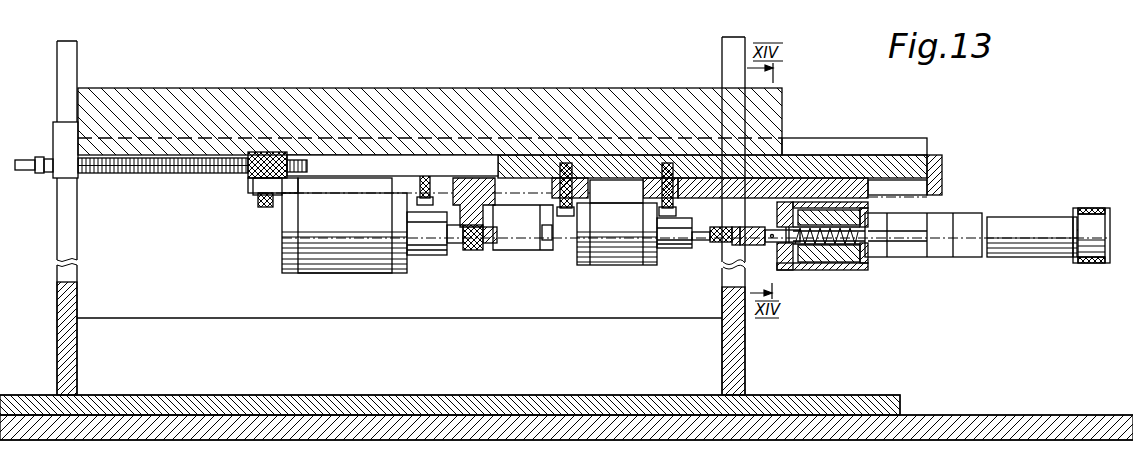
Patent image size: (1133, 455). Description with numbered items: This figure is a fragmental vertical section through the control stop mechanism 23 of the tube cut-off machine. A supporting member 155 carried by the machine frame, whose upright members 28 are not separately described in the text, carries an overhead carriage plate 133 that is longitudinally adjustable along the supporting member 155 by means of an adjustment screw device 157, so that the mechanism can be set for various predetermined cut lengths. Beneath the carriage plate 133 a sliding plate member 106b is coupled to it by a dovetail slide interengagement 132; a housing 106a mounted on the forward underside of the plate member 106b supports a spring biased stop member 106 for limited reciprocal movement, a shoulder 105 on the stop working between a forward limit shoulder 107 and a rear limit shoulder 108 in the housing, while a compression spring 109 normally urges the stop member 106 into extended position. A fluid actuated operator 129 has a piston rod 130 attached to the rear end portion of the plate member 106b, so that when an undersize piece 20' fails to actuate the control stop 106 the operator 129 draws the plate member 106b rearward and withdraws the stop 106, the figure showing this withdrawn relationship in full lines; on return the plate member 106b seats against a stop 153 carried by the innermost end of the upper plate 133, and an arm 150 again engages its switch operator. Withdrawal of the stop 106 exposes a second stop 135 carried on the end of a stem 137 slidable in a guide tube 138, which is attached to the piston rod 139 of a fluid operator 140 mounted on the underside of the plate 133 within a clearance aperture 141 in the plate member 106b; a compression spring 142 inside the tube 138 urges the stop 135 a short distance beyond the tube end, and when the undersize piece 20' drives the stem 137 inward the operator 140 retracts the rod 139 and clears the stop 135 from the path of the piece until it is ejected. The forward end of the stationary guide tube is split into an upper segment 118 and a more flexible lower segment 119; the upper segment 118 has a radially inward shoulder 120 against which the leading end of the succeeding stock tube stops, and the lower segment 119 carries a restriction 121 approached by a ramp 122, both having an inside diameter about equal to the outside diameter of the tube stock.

The upright posts 28 is at (72, 355).
The supporting member 155 is at (632, 101).
The carriage plate 133 is at (880, 165).
The plate member 106b is at (835, 182).
The stop 153 is at (952, 163).
The clearance aperture 141 is at (497, 187).
The adjustment screw device 157 is at (167, 172).
The fluid actuated operator 129 is at (322, 273).
The piston rod 130 is at (453, 245).
The arm 150 is at (475, 252).
The dovetail slide interengagement 132 is at (520, 213).
The fluid operator 140 is at (627, 262).
The piston rod 139 is at (703, 243).
The compression spring 142 is at (742, 246).
The stop member 106 is at (875, 260).
The rear limit shoulder 108 is at (812, 263).
The compression spring 109 is at (870, 272).
The stem 137 is at (853, 270).
The housing 106a is at (800, 263).
The shoulder 105 is at (785, 268).
The forward limit shoulder 107 is at (788, 268).
The guide tube 138 is at (913, 247).
The stop 135 is at (940, 218).
The undersize piece 20' is at (1032, 212).
The upper tube segment 118 is at (1097, 210).
The shoulder 120 is at (1080, 208).
The lower tube segment 119 is at (1100, 263).
The restriction 121 is at (1073, 262).
The ramp 122 is at (1073, 264).
The control stop mechanism 23 is at (922, 323).